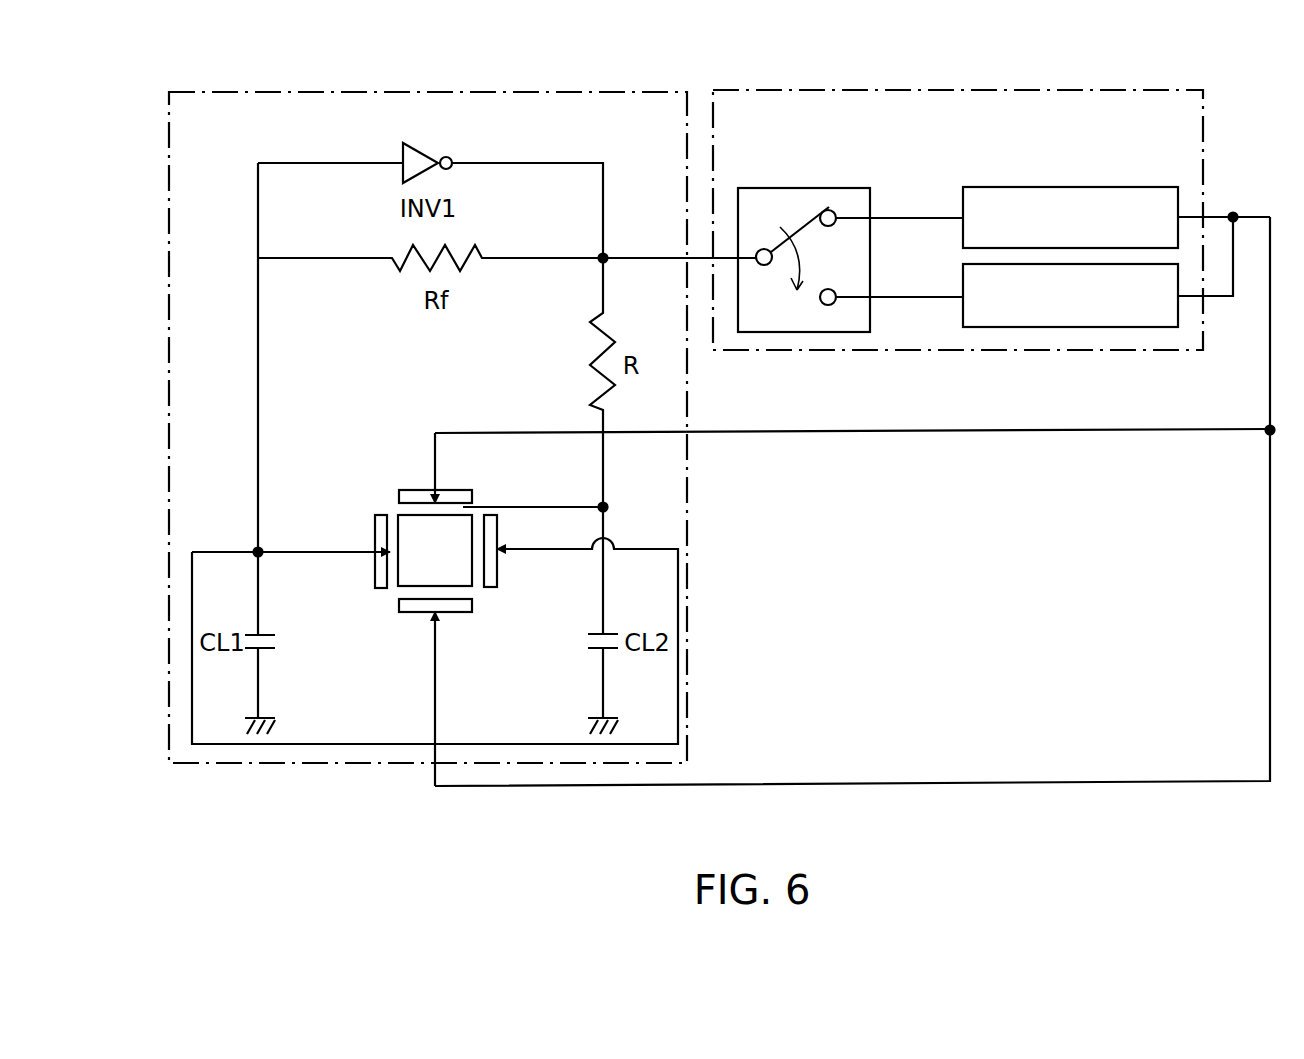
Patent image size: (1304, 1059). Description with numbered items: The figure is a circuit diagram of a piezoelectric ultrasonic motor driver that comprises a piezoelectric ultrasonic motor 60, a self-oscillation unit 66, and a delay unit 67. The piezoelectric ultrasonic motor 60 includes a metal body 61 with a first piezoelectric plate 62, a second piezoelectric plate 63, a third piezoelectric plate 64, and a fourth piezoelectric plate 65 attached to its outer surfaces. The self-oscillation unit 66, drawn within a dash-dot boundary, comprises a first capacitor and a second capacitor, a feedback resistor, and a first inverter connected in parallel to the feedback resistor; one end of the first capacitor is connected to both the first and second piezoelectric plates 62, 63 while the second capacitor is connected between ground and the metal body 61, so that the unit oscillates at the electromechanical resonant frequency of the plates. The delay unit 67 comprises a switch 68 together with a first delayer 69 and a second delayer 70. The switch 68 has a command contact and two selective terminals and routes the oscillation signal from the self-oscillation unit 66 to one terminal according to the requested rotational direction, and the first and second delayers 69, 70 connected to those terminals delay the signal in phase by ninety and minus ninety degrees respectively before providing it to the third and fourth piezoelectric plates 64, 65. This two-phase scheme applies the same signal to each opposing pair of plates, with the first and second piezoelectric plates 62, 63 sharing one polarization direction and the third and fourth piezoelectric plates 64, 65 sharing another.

The piezoelectric ultrasonic motor 60 is at (435, 563).
The metal body 61 is at (472, 585).
The first piezoelectric plate 62 is at (376, 575).
The second piezoelectric plate 63 is at (497, 565).
The third piezoelectric plate 64 is at (415, 488).
The fourth piezoelectric plate 65 is at (466, 612).
The self-oscillation unit 66 is at (258, 766).
The delay unit 67 is at (893, 90).
The switch 68 is at (810, 188).
The first delayer 69 is at (1105, 187).
The second delayer 70 is at (1040, 327).